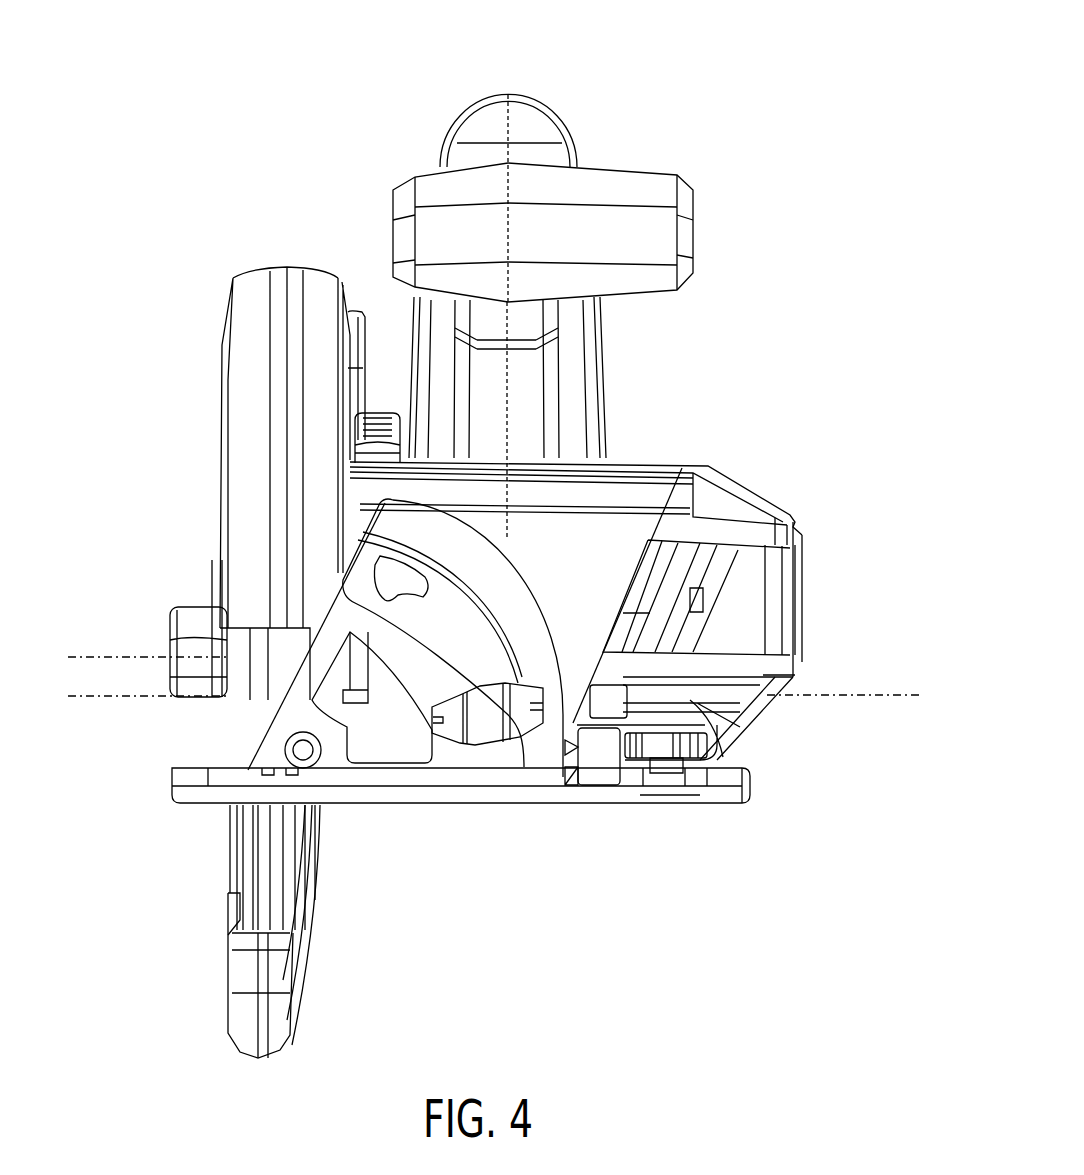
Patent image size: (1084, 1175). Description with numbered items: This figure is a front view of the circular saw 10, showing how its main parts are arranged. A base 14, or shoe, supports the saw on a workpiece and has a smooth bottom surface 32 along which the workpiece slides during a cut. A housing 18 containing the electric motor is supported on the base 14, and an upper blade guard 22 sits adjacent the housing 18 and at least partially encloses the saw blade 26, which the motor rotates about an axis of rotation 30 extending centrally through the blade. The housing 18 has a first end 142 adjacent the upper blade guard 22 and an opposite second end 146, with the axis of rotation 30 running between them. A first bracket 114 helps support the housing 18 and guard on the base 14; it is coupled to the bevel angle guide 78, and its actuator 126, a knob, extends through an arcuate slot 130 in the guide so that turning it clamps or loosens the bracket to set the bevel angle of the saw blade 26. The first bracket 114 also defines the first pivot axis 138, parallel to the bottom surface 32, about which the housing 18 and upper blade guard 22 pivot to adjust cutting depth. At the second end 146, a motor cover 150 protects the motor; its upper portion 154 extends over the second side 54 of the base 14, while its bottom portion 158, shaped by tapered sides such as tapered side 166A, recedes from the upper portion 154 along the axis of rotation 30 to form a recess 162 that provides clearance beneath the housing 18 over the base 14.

The circular saw 10 is at (318, 50).
The base 14 is at (697, 793).
The housing 18 is at (668, 467).
The upper blade guard 22 is at (215, 398).
The saw blade 26 is at (270, 880).
The axis of rotation 30 is at (93, 700).
The bottom surface 32 is at (573, 805).
The second side 54 is at (815, 793).
The bevel angle guide 78 is at (475, 533).
The first bracket 114 is at (600, 785).
The actuator 126 is at (490, 723).
The arcuate slot 130 is at (420, 603).
The first pivot axis 138 is at (93, 655).
The first end 142 is at (387, 323).
The second end 146 is at (798, 367).
The motor cover 150 is at (803, 582).
The upper portion 154 is at (742, 485).
The bottom portion 158 is at (745, 722).
The recess 162 is at (840, 712).
The tapered side 166A is at (740, 727).